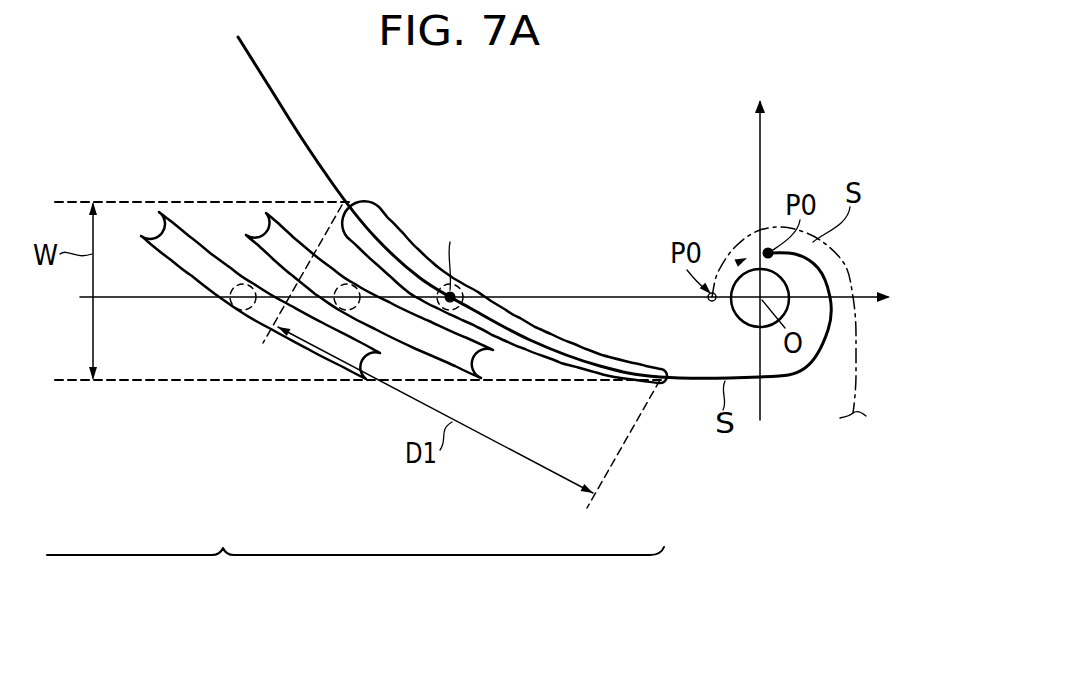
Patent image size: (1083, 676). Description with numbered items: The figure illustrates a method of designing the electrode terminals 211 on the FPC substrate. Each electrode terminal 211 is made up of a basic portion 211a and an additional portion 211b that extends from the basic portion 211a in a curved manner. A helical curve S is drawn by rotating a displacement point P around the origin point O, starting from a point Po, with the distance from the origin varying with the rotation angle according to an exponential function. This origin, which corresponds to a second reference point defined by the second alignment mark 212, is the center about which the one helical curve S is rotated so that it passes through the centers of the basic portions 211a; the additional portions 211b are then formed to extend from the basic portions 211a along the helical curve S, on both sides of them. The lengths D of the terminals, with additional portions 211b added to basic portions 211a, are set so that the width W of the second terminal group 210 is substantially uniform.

The second terminal group 210 is at (357, 380).
The electrode terminal 211 is at (504, 270).
The basic portion 211a is at (462, 290).
The additional portion 211b is at (407, 221).
The second alignment mark 212 is at (737, 317).